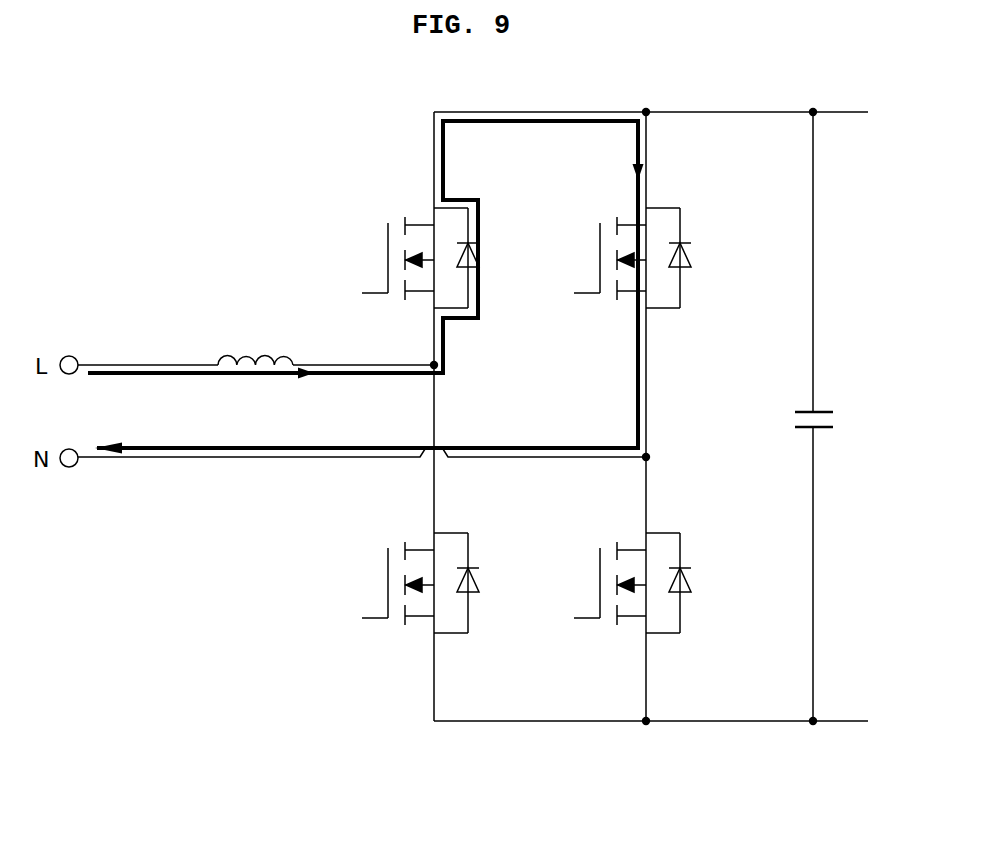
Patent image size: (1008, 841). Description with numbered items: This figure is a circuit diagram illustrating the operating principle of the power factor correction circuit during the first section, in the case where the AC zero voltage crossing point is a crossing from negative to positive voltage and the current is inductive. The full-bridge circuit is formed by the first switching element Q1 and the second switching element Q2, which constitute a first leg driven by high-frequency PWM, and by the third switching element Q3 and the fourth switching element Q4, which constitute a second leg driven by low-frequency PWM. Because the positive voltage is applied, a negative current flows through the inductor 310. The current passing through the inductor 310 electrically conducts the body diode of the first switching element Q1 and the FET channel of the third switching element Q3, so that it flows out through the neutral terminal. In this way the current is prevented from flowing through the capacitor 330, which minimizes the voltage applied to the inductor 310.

The inductor 310 is at (248, 351).
The capacitor 330 is at (826, 411).
The first switching element Q1 is at (416, 270).
The second switching element Q2 is at (417, 594).
The third switching element Q3 is at (628, 270).
The fourth switching element Q4 is at (632, 594).